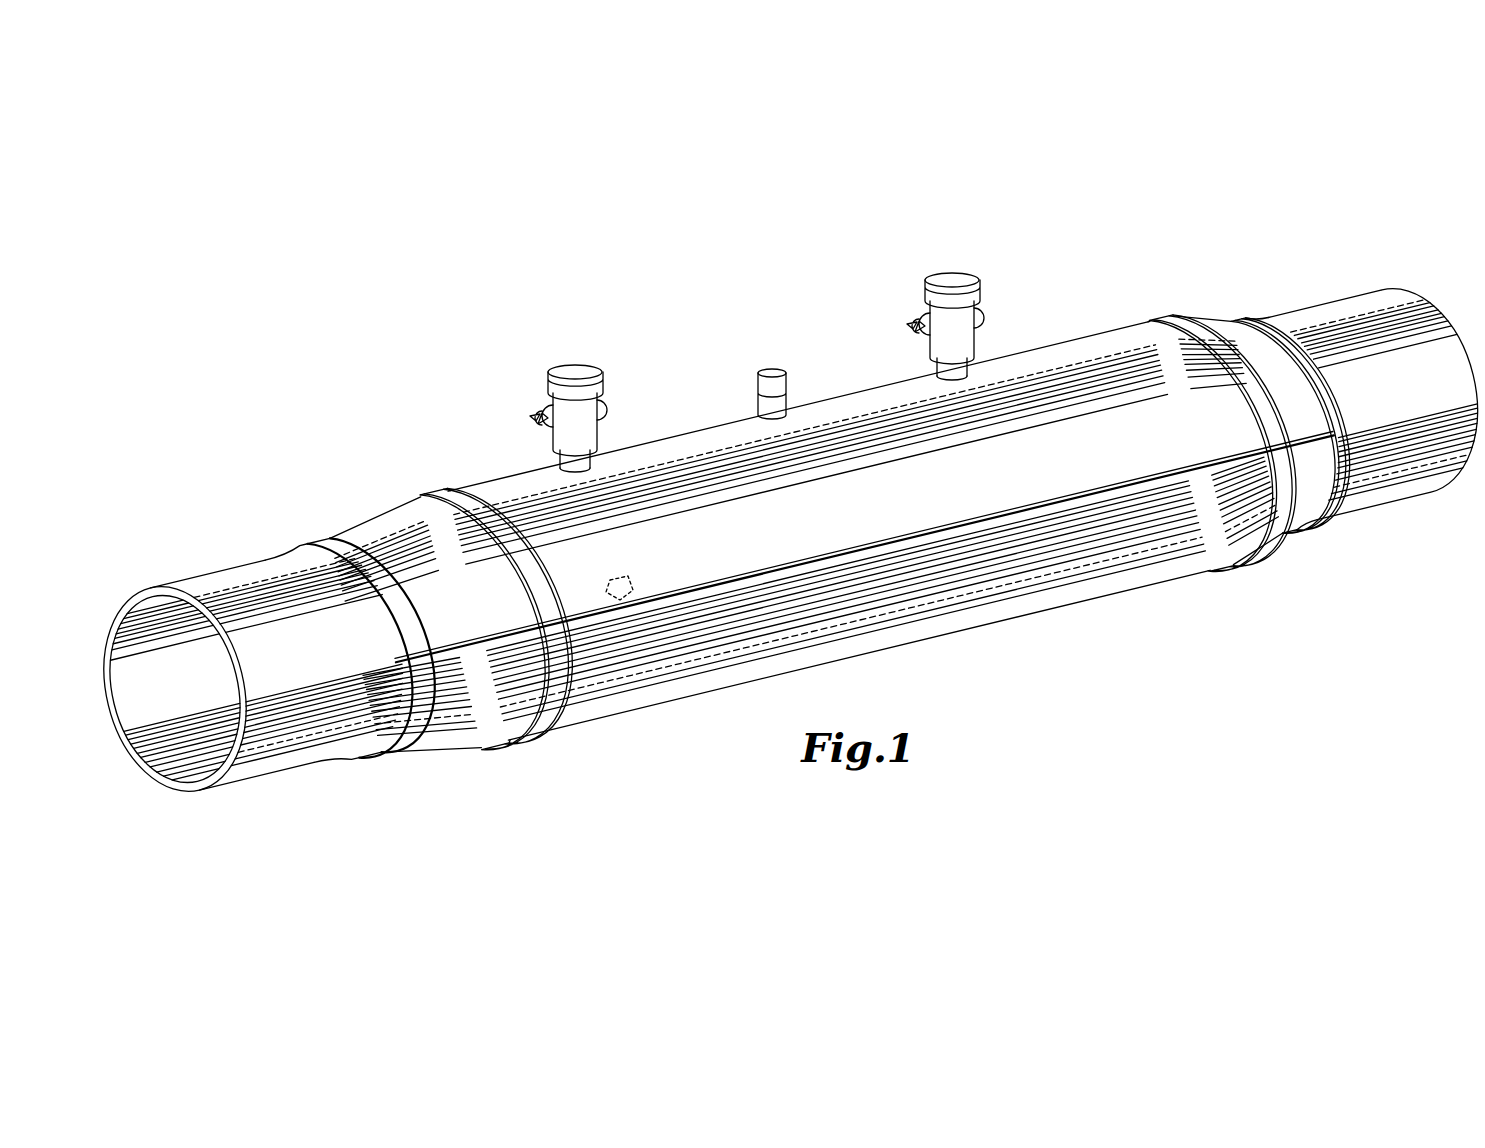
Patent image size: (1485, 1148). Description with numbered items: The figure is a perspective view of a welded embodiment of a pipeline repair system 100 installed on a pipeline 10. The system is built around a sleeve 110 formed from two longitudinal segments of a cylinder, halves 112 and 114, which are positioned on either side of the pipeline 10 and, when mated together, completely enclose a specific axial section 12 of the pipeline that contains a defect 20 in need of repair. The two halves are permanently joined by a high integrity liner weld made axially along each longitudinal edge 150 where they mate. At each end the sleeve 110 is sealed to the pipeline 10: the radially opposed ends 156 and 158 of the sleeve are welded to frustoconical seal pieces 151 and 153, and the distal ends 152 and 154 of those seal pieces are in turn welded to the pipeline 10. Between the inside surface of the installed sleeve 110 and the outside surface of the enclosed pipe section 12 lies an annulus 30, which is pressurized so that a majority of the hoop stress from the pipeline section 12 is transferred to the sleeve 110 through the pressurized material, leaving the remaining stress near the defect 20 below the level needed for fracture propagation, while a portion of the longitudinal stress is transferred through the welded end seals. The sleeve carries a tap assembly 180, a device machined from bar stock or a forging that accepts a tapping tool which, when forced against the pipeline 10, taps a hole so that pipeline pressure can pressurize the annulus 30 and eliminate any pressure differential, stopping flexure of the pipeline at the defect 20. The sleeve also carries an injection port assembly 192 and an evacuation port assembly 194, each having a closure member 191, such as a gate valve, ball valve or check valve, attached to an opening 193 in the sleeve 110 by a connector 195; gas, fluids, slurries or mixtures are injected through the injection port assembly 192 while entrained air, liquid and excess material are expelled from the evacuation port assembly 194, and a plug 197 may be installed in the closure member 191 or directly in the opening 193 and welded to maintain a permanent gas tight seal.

The pipeline 10 is at (282, 673).
The axial section of pipeline 12 is at (727, 447).
The defect 20 is at (620, 600).
The annulus 30 is at (728, 672).
The pipeline repair system 100 is at (830, 526).
The sleeve 110 is at (864, 493).
The first sleeve half 112 is at (943, 481).
The second sleeve half 114 is at (963, 593).
The longitudinal edge 150 is at (1110, 478).
The frustoconical seal piece 151 is at (436, 621).
The distal end of seal piece 152 is at (348, 765).
The frustoconical seal piece 153 is at (1243, 423).
The distal end of seal piece 154 is at (1335, 413).
The sleeve end 156 is at (520, 722).
The sleeve end 158 is at (1143, 318).
The tap assembly 180 is at (775, 365).
The closure member 191 is at (605, 412).
The injection port assembly 192 is at (578, 362).
The opening 193 is at (545, 468).
The evacuation port assembly 194 is at (957, 276).
The connector 195 is at (592, 460).
The plug 197 is at (546, 382).